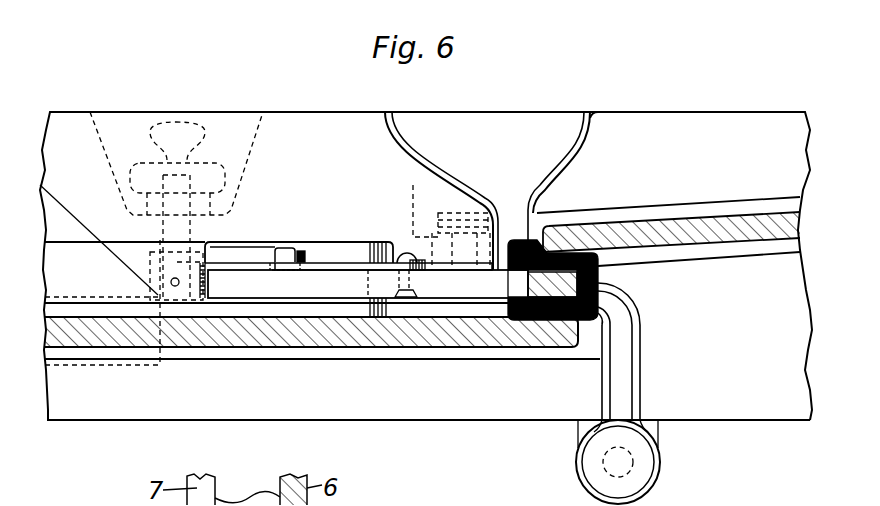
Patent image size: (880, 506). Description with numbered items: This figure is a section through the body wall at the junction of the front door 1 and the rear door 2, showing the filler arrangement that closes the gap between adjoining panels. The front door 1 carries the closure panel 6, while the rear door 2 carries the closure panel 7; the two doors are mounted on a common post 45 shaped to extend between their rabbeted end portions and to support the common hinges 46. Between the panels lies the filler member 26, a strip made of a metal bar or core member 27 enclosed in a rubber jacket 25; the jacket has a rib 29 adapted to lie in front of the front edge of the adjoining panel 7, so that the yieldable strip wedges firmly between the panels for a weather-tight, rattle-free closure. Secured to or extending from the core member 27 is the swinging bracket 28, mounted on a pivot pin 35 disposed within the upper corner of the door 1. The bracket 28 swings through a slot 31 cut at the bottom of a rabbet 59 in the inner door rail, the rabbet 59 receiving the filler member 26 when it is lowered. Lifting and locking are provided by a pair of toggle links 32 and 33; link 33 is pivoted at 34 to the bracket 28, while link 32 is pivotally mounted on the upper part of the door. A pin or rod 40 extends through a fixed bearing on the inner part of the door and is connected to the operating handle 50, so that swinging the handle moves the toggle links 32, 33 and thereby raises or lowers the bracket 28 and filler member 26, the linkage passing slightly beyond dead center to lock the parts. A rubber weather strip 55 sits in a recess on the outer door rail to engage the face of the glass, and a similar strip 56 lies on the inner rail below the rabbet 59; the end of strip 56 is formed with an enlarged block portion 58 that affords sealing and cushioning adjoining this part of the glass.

The front door 1 is at (425, 284).
The rear door 2 is at (701, 283).
The closure panel 6 is at (182, 338).
The closure panel 7 is at (758, 222).
The rubber jacket 25 is at (608, 284).
The filler member 26 is at (612, 303).
The core member 27 is at (532, 281).
The swinging bracket 28 is at (368, 285).
The rib 29 is at (514, 240).
The slot 31 is at (312, 247).
The toggle link 32 is at (250, 243).
The toggle link 33 is at (330, 263).
The pivot 34 is at (417, 283).
The pivot pin 35 is at (452, 242).
The pin or rod 40 is at (163, 228).
The common post 45 is at (626, 360).
The common hinges 46 is at (645, 476).
The operating handle 50 is at (180, 122).
The rubber weather strip 55 is at (398, 352).
The weather strip 56 is at (273, 310).
The enlarged block portion 58 is at (450, 310).
The rabbet 59 is at (80, 246).